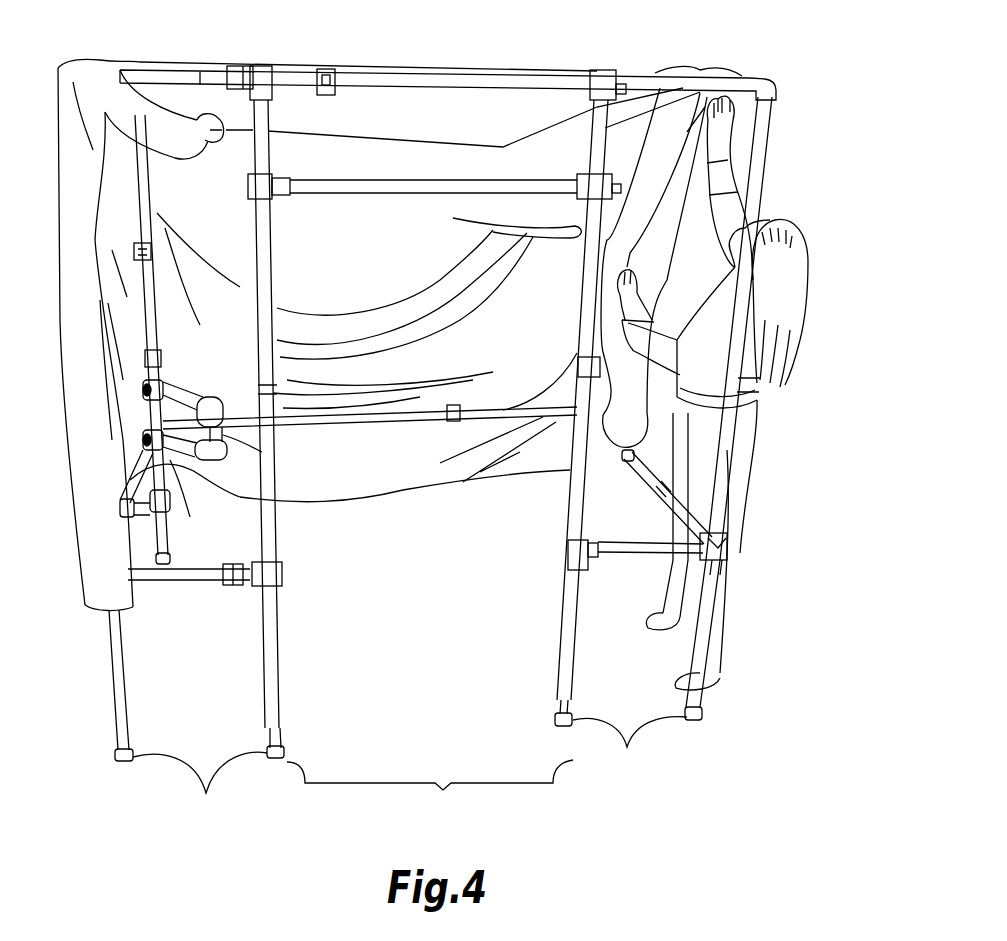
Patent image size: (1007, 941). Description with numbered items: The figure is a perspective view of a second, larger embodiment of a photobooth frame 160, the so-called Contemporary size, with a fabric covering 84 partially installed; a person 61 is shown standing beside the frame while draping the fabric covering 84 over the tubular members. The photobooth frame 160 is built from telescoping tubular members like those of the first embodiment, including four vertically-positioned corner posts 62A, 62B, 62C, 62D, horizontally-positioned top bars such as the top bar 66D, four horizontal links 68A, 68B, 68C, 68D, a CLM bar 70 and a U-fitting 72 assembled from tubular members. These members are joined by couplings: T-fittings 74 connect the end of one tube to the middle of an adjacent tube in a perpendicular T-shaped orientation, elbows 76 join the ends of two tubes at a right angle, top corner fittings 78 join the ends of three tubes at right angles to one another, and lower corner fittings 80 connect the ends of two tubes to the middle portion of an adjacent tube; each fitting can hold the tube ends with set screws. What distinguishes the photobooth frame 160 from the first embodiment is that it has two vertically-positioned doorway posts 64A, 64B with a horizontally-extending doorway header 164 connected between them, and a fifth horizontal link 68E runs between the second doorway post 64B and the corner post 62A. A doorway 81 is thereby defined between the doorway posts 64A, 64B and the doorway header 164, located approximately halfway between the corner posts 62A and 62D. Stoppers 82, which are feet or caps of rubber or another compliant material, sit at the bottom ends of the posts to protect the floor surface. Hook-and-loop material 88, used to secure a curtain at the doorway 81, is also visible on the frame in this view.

The person 61 is at (747, 380).
The corner post 62A is at (697, 700).
The corner post 62B is at (592, 522).
The corner post 62C is at (165, 540).
The corner post 62D is at (118, 697).
The doorway post 64A is at (280, 598).
The doorway post 64B is at (560, 713).
The top bar 66D is at (658, 78).
The horizontal link 68A is at (643, 470).
The horizontal link 68B is at (477, 416).
The horizontal link 68C is at (175, 495).
The horizontal link 68D is at (172, 581).
The fifth horizontal link 68E is at (613, 553).
The CLM bar 70 is at (147, 233).
The U-fitting 72 is at (262, 462).
The T-fitting 74 is at (270, 573).
The elbow 76 is at (215, 460).
The top corner fitting 78 is at (762, 79).
The lower corner fitting 80 is at (722, 553).
The doorway 81 is at (430, 789).
The stopper 82 is at (410, 771).
The fabric covering 84 is at (420, 493).
The hook-and-loop material 88 is at (381, 190).
The photobooth frame 160 is at (770, 130).
The doorway header 164 is at (538, 190).